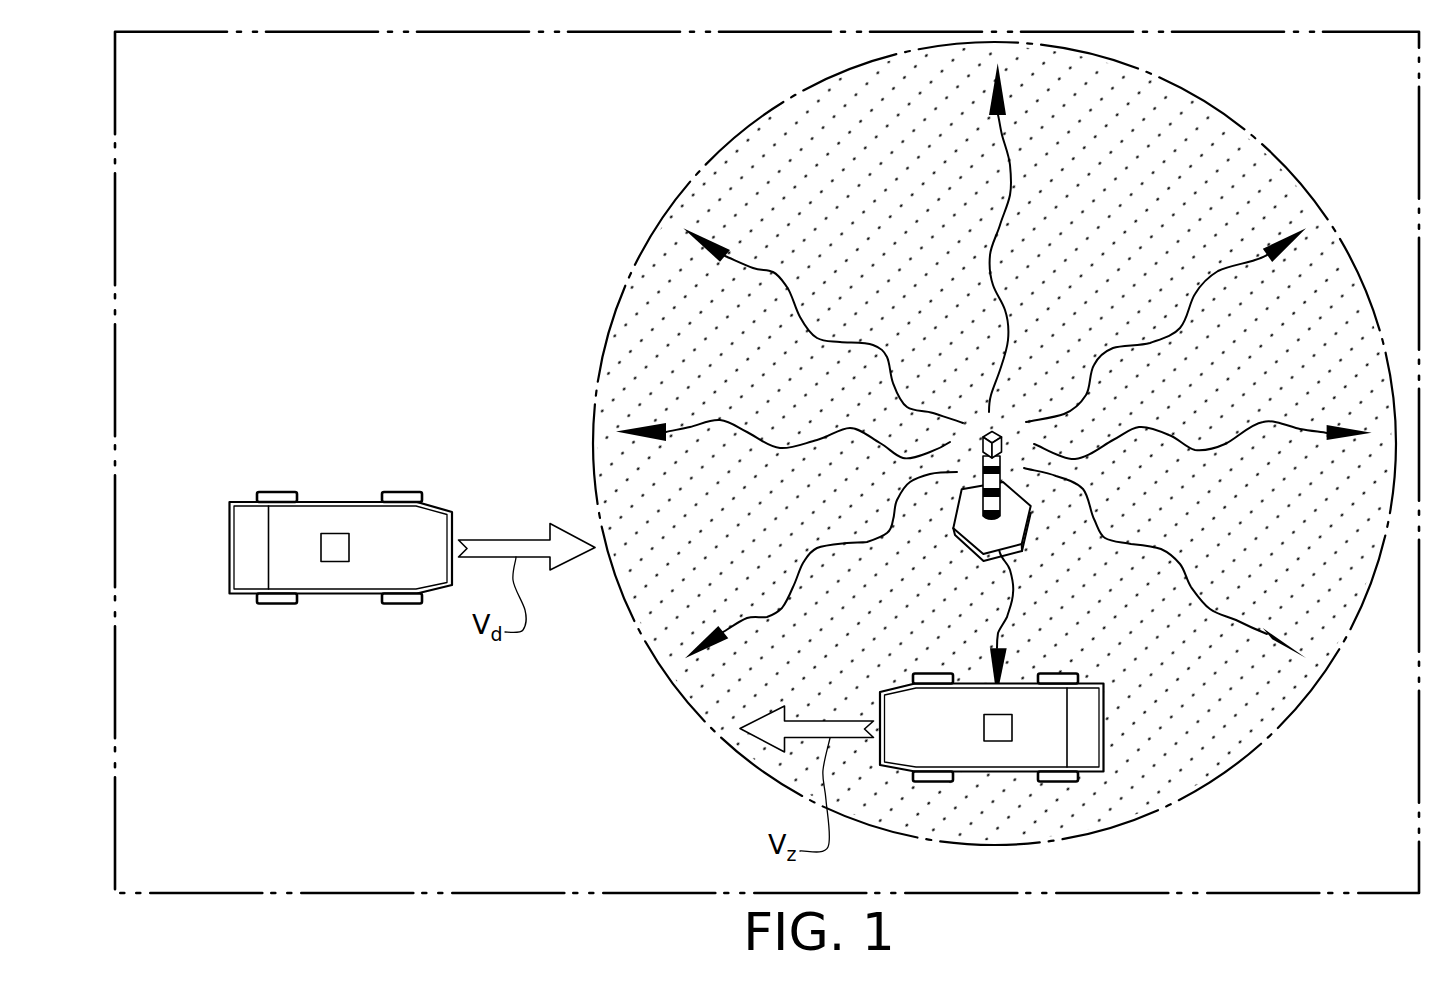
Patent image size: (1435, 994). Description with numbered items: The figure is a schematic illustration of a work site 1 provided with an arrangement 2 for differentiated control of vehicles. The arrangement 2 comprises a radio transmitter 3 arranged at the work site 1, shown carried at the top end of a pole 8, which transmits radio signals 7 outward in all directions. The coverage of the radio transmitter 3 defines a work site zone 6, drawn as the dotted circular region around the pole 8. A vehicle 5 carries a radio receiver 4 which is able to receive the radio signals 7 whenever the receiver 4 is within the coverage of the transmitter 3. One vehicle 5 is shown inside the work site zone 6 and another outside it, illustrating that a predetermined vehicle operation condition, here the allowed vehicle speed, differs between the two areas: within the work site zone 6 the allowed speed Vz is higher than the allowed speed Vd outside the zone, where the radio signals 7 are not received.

The work site 1 is at (343, 843).
The arrangement 2 is at (527, 122).
The radio transmitter 3 is at (982, 444).
The radio receiver 4 is at (338, 533).
The vehicle 5 is at (338, 593).
The work site zone 6 is at (775, 192).
The radio signals 7 is at (755, 268).
The pole 8 is at (982, 475).